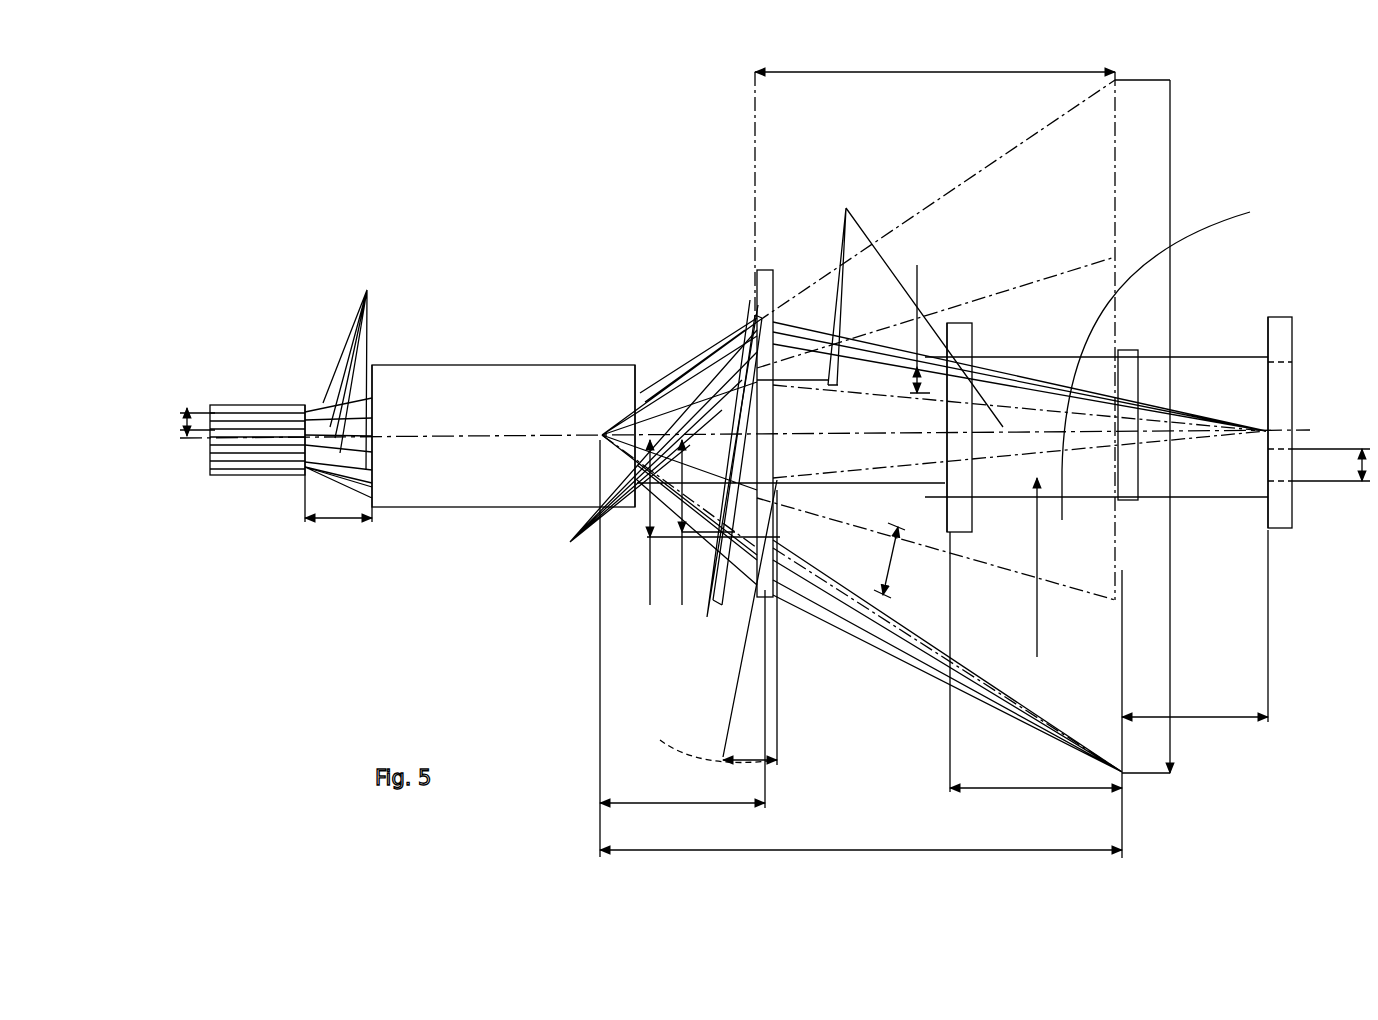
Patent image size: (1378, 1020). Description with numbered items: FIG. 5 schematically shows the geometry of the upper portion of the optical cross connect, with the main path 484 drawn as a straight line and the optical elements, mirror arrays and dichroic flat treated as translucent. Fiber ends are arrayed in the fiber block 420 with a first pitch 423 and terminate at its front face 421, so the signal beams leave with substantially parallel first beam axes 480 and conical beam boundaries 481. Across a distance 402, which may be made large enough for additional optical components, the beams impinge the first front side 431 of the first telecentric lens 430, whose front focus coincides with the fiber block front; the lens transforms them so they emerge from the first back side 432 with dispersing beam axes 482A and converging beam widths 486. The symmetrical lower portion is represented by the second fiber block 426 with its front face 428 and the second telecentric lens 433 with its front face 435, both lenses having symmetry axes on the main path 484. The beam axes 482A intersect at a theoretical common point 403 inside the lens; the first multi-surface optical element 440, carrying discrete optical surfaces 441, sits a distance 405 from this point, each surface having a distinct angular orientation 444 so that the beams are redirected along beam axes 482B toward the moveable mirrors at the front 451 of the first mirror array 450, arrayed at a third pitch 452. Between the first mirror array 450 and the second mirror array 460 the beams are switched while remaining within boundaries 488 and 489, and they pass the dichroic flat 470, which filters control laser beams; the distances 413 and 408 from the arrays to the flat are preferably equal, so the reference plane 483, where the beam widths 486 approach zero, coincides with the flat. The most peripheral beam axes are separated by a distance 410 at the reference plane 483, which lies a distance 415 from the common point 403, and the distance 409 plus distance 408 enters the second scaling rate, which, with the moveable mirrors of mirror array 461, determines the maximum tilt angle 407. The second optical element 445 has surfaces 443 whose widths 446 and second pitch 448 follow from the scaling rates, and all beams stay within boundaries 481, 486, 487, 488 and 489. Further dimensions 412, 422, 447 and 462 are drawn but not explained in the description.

The distance 402 is at (311, 498).
The common point 403 is at (602, 433).
The distance 405 is at (682, 699).
The maximum tilt angle 407 is at (1156, 354).
The distance 408 is at (1195, 626).
The distance 409 is at (935, 322).
The distance 410 is at (1142, 426).
The ray height 412 is at (1024, 567).
The distance 413 is at (1036, 662).
The distance 415 is at (861, 648).
The fiber block 420 is at (237, 511).
The front face 421 is at (365, 493).
The output rays from fiber bundle 422 is at (308, 465).
The first pitch 423 is at (188, 397).
The fiber block 426 is at (235, 478).
The front face 428 is at (307, 472).
The first telecentric lens 430 is at (503, 398).
The first front side 431 is at (288, 406).
The first back side 432 is at (637, 397).
The second telecentric lens 433 is at (417, 365).
The front face 435 is at (372, 380).
The first multi-surface optical element 440 is at (691, 540).
The discrete optical surfaces 441 is at (684, 470).
The discrete optical surfaces 443 is at (707, 617).
The angular orientation 444 is at (718, 743).
The second optical element 445 is at (772, 593).
The widths 446 is at (883, 560).
The lens thickness 447 is at (695, 522).
The second pitch 448 is at (701, 522).
The first mirror array 450 is at (947, 530).
The front 451 is at (946, 515).
The third pitch 452 is at (911, 329).
The second mirror array 460 is at (1275, 317).
The mirror array 461 is at (1267, 337).
The spot size 462 is at (1331, 436).
The dichroic flat 470 is at (1118, 350).
The first beam axes 480 is at (372, 290).
The conical beam boundaries 481 is at (323, 402).
The dispersing beam axes 482A is at (632, 443).
The beam axes 482B is at (936, 307).
The reference plane 483 is at (1125, 752).
The main path 484 is at (1003, 425).
The converging beam widths 486 is at (735, 327).
The boundaries 487 is at (772, 390).
The boundaries 488 is at (1030, 355).
The boundaries 489 is at (1206, 496).